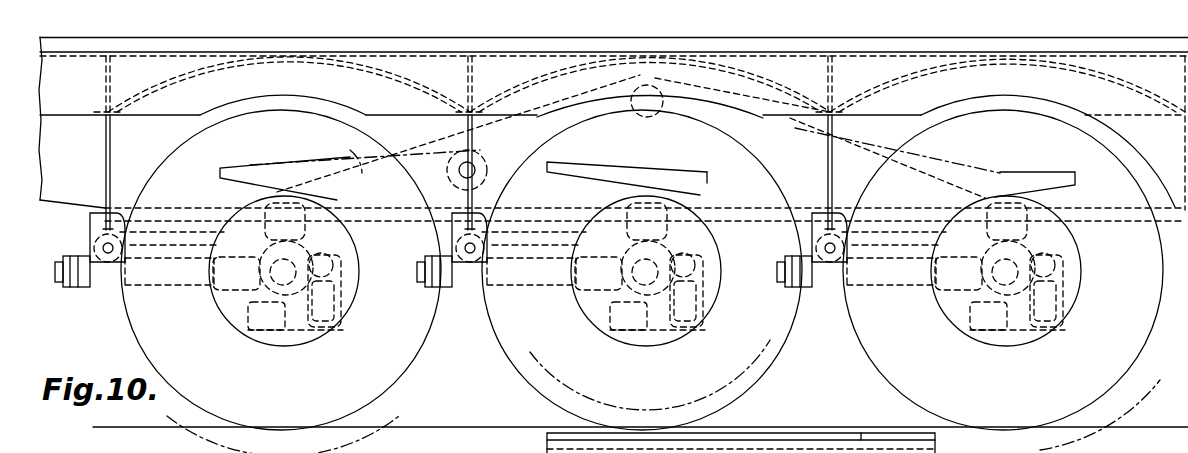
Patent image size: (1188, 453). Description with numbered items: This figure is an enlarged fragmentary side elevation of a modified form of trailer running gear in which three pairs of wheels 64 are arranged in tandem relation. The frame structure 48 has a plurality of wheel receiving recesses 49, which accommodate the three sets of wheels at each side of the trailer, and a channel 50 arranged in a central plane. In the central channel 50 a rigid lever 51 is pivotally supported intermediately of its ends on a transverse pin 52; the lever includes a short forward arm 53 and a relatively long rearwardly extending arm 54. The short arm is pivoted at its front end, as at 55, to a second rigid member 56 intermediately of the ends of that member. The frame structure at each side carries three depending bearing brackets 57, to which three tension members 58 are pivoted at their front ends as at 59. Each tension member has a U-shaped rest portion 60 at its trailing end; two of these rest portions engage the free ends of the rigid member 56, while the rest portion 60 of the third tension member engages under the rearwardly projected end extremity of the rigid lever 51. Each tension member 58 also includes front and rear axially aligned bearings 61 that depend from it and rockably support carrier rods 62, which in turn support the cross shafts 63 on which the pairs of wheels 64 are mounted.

The frame structure 48 is at (132, 182).
The wheel receiving recesses 49 is at (565, 108).
The channel 50 is at (165, 82).
The rigid lever 51 is at (601, 97).
The transverse pin 52 is at (668, 100).
The short forward arm 53 is at (466, 134).
The rearwardly extending arm 54 is at (981, 168).
The pivot 55 is at (463, 175).
The second rigid member 56 is at (346, 152).
The depending bearing brackets 57 is at (93, 285).
The tension members 58 is at (182, 230).
The pivot 59 is at (110, 272).
The U-shaped rest portions 60 is at (345, 236).
The bearings 61 is at (125, 290).
The carrier rods 62 is at (190, 274).
The cross shafts 63 is at (266, 318).
The wheels 64 is at (410, 392).